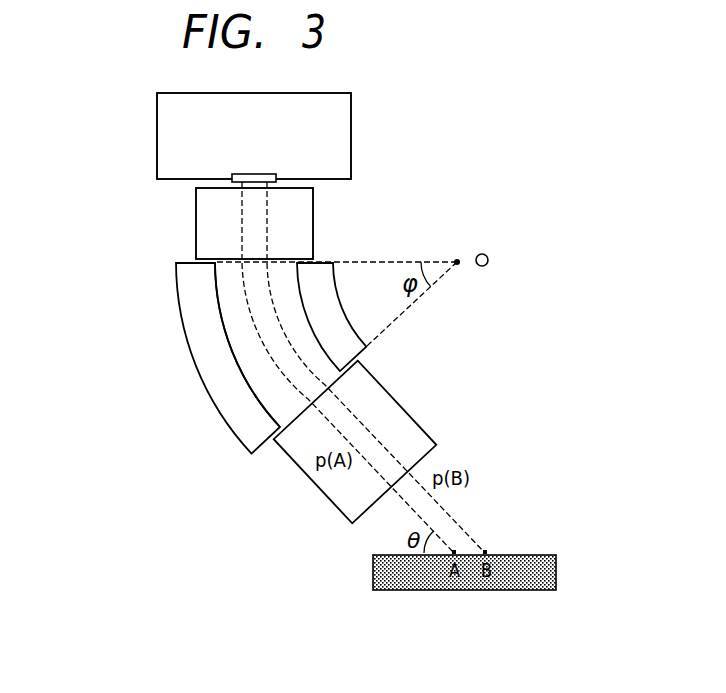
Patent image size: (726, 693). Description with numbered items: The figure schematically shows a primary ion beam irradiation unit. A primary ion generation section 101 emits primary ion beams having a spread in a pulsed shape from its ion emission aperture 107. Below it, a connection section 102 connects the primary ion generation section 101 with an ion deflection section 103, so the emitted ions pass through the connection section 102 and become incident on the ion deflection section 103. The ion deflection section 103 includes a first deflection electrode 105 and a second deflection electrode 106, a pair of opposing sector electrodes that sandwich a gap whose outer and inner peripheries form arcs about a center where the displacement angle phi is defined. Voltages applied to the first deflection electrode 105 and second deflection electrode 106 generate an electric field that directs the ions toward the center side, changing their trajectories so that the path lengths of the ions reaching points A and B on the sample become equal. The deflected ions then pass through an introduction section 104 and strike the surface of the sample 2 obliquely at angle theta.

The primary ion generation section 101 is at (341, 113).
The ion emission aperture 107 is at (263, 172).
The connection section 102 is at (207, 220).
The ion deflection section 103 is at (233, 319).
The first deflection electrode 105 is at (238, 407).
The second deflection electrode 106 is at (323, 292).
The introduction section 104 is at (390, 410).
The sample 2 is at (380, 567).